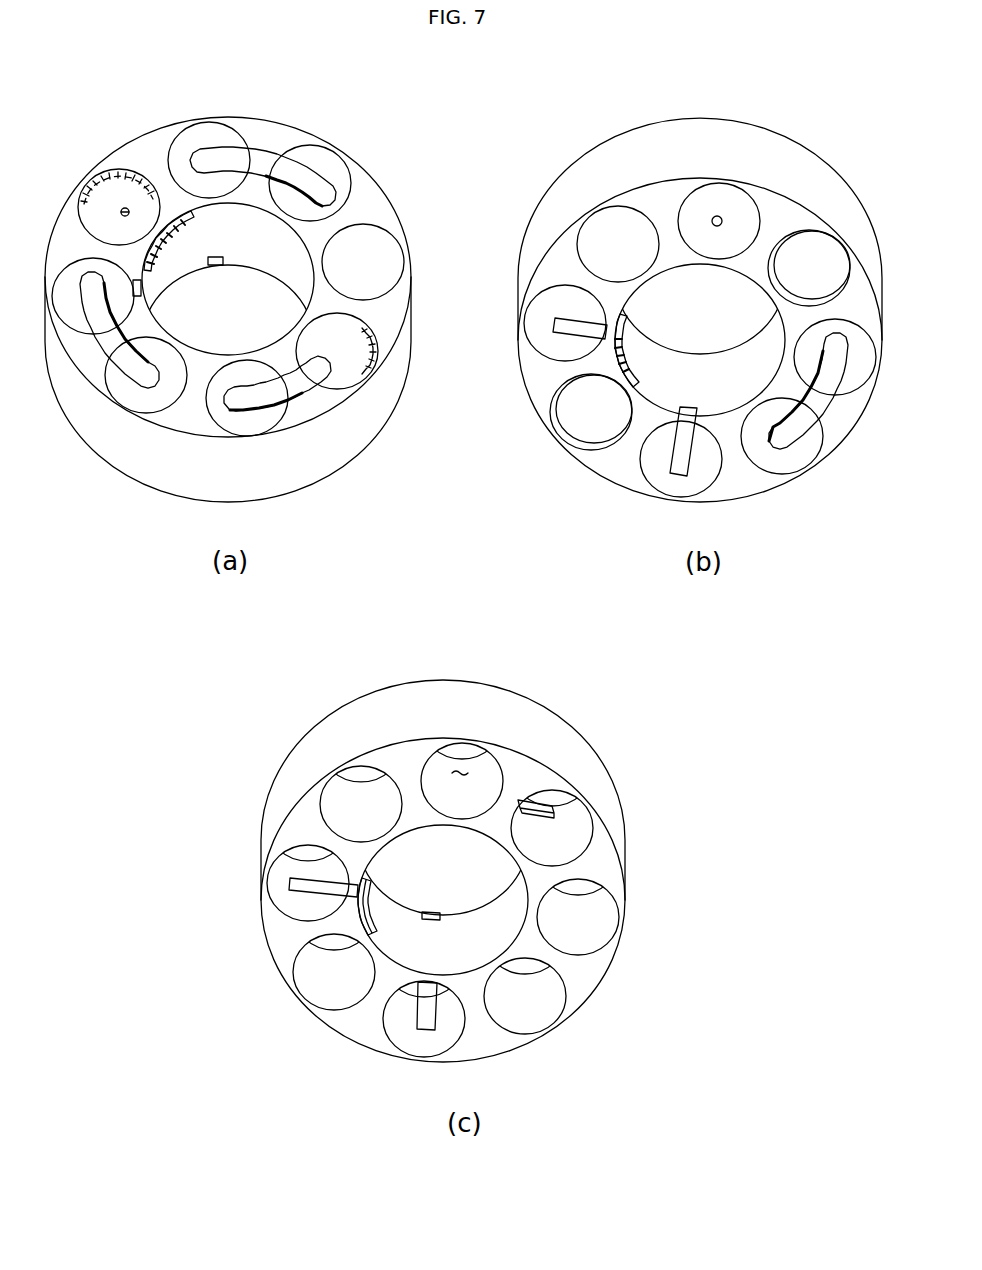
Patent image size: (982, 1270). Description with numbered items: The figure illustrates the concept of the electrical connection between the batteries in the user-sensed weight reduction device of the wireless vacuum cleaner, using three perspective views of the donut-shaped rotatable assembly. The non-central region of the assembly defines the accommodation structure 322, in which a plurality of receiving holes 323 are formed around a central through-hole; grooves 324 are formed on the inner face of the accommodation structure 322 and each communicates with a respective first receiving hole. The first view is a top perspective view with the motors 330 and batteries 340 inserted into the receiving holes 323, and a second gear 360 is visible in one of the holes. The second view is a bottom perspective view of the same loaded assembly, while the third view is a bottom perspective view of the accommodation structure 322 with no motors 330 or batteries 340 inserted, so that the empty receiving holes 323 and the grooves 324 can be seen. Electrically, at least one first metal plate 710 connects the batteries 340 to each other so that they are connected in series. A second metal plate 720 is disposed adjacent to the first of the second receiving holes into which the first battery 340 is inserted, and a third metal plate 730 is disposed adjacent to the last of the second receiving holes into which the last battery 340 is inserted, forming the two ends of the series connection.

The accommodation structure 322 is at (265, 138).
The receiving holes 323 is at (460, 772).
The grooves 324 is at (542, 805).
The motors 330 is at (592, 412).
The batteries 340 is at (337, 177).
The second gears 360 is at (123, 197).
The first metal plate 710 is at (322, 362).
The second metal plate 720 is at (137, 283).
The third metal plate 730 is at (682, 450).